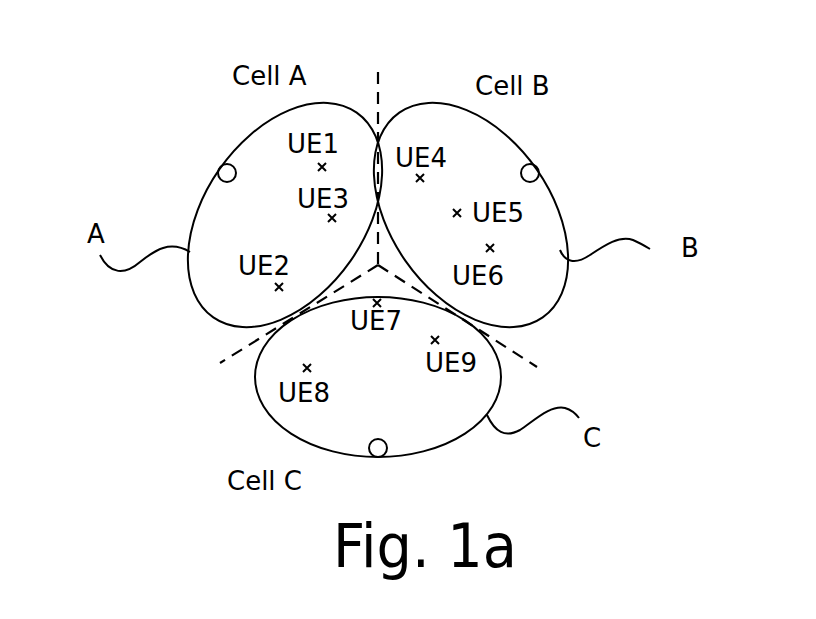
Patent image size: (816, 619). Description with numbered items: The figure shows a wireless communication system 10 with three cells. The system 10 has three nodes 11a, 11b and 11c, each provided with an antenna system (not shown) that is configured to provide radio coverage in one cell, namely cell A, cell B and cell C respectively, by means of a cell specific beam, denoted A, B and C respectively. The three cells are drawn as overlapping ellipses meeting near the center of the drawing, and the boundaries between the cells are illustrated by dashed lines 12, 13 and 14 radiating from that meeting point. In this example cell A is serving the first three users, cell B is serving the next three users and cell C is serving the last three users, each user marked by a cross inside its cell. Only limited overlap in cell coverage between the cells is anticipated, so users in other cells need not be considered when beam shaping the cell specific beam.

The wireless communication system 10 is at (118, 84).
The node 11a is at (218, 170).
The node 11b is at (538, 175).
The node 11c is at (385, 455).
The dashed line 12 is at (379, 88).
The dashed line 13 is at (537, 367).
The dashed line 14 is at (219, 365).